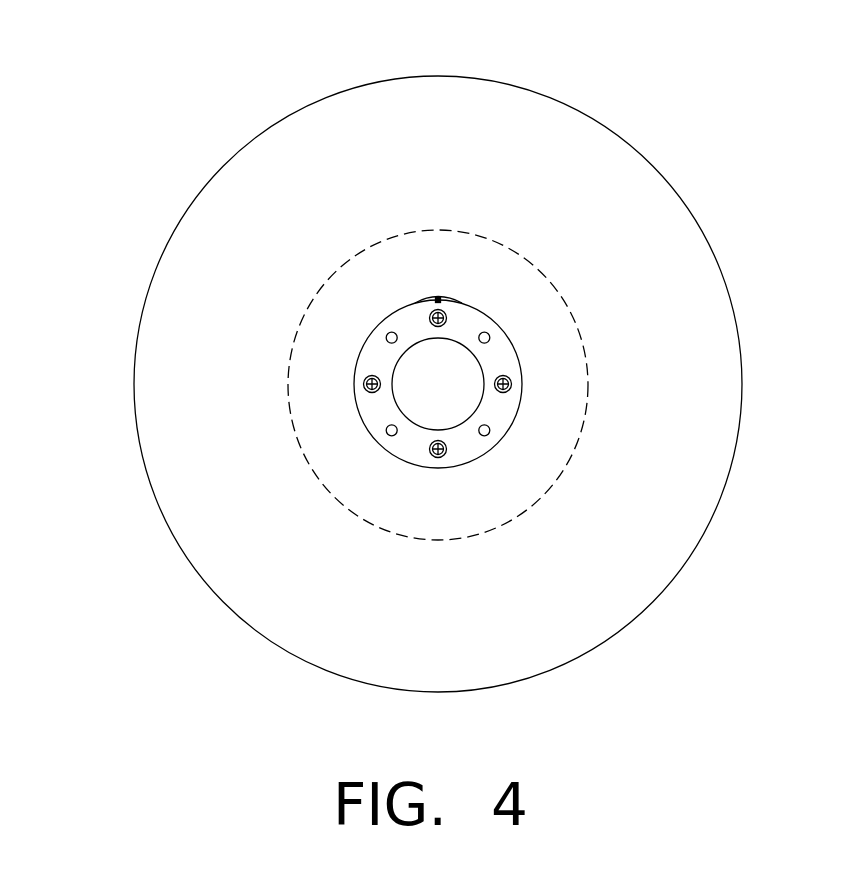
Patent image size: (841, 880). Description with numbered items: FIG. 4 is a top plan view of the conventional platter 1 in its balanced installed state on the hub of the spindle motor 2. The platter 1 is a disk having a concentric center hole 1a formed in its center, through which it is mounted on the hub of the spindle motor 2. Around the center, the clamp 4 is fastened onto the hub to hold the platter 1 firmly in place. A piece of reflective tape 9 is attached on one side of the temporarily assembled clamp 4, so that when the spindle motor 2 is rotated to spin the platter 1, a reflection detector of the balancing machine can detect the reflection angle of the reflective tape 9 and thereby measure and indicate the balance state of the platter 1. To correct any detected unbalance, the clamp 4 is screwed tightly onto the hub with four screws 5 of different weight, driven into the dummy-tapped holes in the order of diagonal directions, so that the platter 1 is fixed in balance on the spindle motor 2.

The platter 1 is at (685, 287).
The center hole 1a is at (425, 298).
The spindle motor 2 is at (556, 289).
The clamp 4 is at (375, 413).
The screw 5 is at (512, 382).
The reflective tape 9 is at (438, 298).